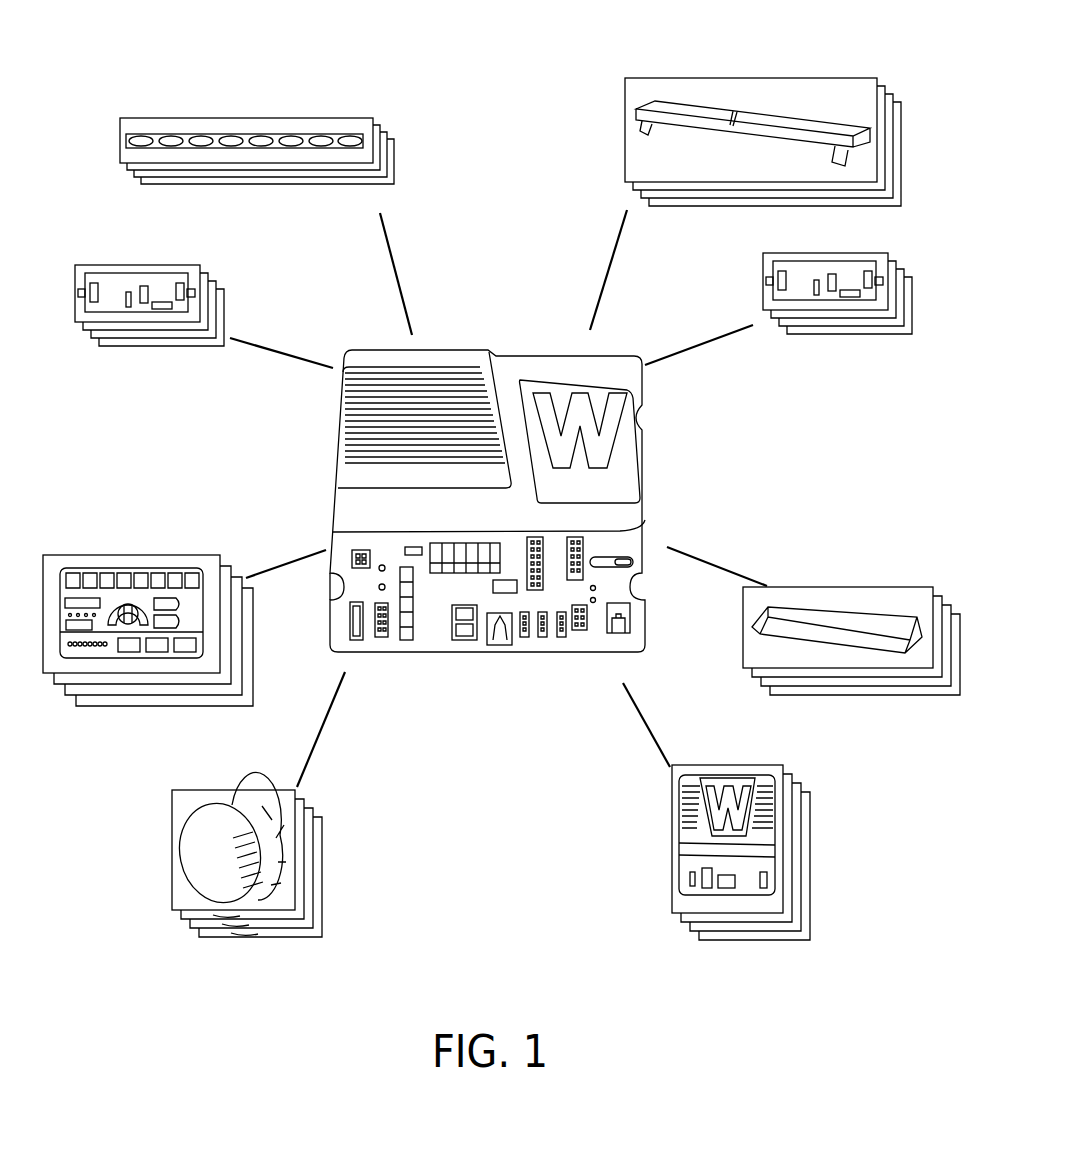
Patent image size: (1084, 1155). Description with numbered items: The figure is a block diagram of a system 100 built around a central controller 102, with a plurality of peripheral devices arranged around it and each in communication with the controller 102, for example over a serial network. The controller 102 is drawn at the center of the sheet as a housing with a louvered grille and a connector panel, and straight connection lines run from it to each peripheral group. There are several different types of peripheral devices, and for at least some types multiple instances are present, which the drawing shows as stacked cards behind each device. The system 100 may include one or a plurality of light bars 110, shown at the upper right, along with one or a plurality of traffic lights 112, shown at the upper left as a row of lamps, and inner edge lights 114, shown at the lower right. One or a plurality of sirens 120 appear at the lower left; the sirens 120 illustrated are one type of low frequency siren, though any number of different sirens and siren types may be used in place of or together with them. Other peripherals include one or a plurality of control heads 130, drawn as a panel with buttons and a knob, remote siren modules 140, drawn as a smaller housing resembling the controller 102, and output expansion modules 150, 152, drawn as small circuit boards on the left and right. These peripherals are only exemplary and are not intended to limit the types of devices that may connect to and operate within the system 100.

The system 100 is at (496, 102).
The controller 102 is at (495, 352).
The light bar 110 is at (760, 76).
The traffic light 112 is at (238, 116).
The inner edge light 114 is at (886, 700).
The siren 120 is at (254, 950).
The control head 130 is at (89, 706).
The remote siren module 140 is at (764, 945).
The output expansion module 150 is at (150, 350).
The output expansion module 152 is at (859, 340).